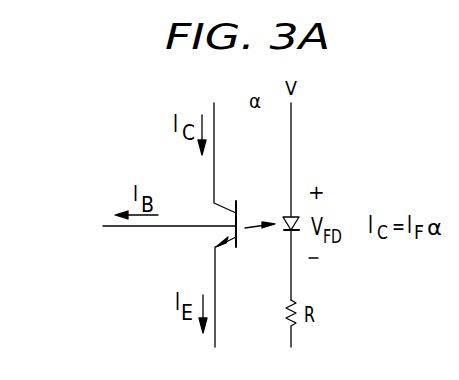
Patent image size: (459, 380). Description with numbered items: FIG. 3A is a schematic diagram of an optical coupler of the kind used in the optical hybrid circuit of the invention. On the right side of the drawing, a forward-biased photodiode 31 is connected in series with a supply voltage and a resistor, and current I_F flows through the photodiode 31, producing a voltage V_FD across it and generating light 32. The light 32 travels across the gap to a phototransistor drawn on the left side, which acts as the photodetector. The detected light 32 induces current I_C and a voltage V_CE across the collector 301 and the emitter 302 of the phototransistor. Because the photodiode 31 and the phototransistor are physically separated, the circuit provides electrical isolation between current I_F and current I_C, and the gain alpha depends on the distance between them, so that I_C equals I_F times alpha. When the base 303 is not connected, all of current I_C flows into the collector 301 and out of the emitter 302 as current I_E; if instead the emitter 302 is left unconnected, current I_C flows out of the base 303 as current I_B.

The collector 301 is at (222, 197).
The emitter 302 is at (228, 252).
The base 303 is at (200, 222).
The photodiode 31 is at (288, 213).
The light 32 is at (258, 232).